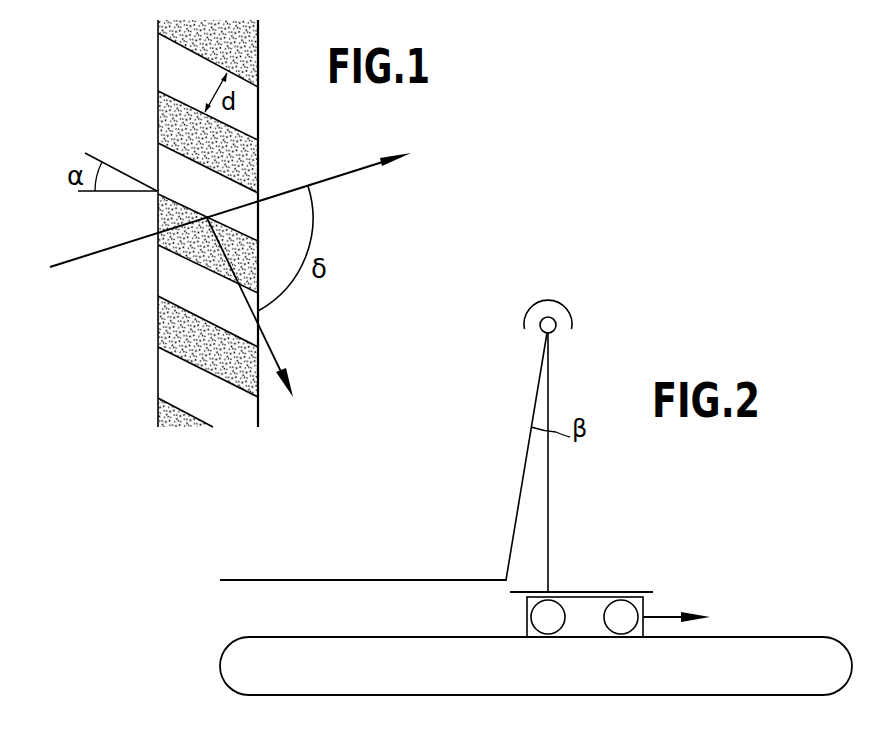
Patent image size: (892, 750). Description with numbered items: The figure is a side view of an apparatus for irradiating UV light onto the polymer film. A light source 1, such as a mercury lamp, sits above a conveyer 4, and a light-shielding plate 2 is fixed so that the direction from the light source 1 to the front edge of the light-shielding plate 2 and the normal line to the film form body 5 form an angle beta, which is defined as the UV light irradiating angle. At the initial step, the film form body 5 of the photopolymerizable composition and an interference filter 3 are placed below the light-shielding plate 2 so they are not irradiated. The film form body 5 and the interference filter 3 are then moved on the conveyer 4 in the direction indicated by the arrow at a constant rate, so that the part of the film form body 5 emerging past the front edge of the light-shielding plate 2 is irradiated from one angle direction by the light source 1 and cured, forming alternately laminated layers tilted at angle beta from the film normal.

The light source 1 is at (561, 316).
The light-shielding plate 2 is at (340, 580).
The interference filter 3 is at (577, 592).
The conveyer 4 is at (747, 637).
The film form body 5 is at (650, 605).